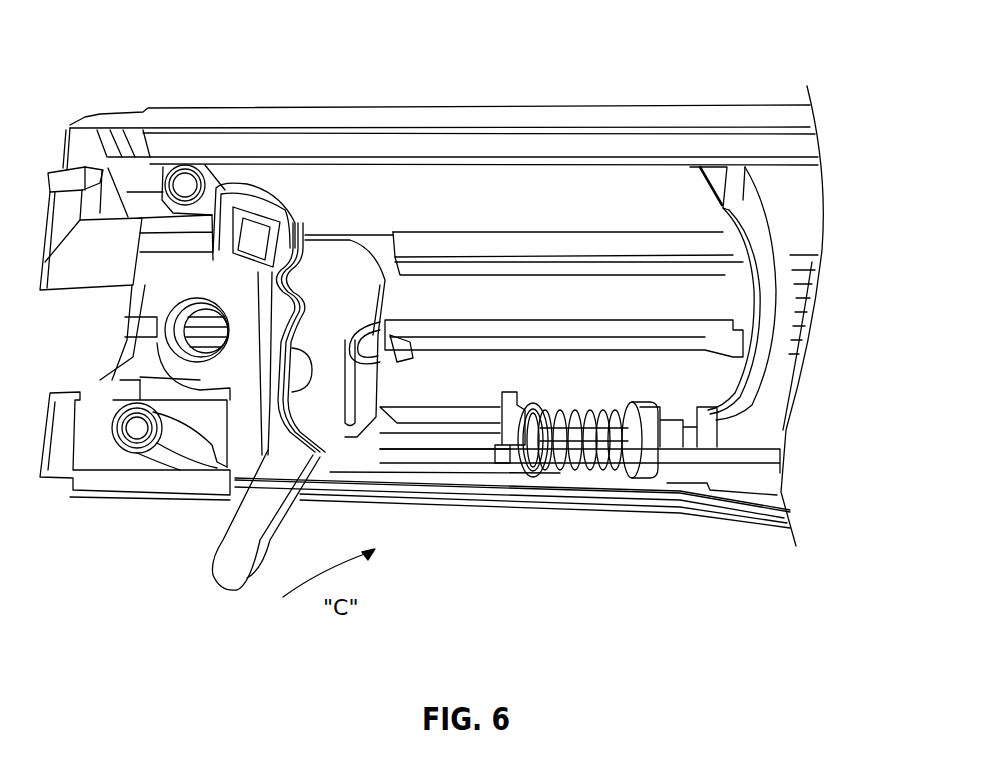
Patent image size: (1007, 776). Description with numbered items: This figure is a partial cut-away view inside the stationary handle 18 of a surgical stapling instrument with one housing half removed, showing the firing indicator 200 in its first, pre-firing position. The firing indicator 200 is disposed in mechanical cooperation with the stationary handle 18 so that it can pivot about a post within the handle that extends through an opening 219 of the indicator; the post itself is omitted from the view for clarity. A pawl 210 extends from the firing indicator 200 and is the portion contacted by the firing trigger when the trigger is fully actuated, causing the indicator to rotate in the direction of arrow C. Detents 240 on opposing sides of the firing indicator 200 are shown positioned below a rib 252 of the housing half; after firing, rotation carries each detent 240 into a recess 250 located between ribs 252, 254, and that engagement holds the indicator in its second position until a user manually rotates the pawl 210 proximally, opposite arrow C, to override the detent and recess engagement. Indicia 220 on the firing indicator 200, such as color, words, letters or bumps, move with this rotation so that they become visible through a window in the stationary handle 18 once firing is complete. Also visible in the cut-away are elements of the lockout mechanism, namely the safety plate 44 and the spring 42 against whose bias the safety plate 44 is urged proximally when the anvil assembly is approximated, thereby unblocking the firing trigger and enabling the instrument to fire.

The stationary handle 18 is at (762, 113).
The spring 42 is at (563, 477).
The safety plate 44 is at (740, 475).
The firing indicator 200 is at (324, 288).
The pawl 210 is at (215, 570).
The opening 219 is at (200, 328).
The indicia 220 is at (243, 207).
The detents 240 is at (298, 222).
The recess 250 is at (524, 300).
The rib 252 is at (622, 327).
The rib 254 is at (424, 240).